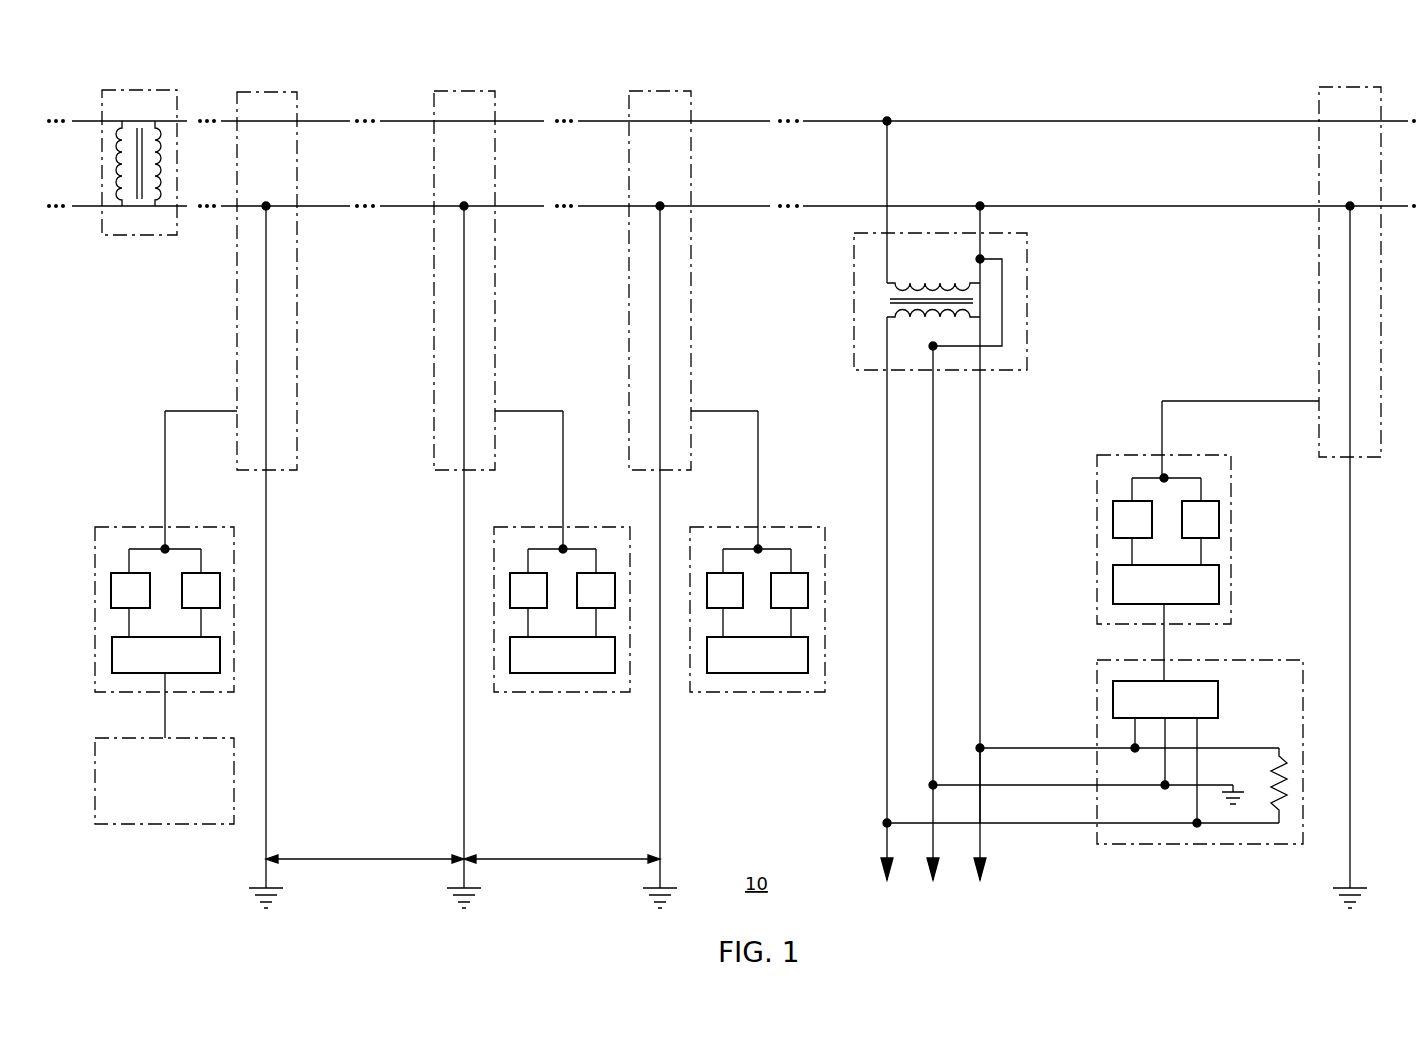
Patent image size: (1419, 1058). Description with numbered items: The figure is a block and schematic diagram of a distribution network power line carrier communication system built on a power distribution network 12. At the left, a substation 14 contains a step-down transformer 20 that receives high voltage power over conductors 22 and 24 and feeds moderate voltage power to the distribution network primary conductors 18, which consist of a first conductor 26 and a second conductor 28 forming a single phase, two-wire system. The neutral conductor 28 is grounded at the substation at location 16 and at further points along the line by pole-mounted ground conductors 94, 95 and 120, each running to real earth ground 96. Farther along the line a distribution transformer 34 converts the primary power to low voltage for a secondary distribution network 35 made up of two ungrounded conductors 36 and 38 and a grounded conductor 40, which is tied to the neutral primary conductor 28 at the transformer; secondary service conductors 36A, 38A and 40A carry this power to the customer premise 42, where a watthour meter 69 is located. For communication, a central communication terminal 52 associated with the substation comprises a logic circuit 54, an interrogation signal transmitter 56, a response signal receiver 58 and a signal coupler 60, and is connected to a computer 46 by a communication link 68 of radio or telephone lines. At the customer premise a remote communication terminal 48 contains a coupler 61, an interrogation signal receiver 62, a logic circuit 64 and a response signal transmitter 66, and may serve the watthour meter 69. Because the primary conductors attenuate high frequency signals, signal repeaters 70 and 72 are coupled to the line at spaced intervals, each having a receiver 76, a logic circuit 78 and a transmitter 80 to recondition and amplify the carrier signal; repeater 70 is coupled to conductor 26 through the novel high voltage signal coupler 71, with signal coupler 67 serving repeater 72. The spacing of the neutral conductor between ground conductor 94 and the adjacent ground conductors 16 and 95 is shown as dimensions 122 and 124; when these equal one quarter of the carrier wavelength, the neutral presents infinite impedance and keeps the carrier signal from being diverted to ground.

The power distribution network 12 is at (884, 182).
The substation 14 is at (118, 153).
The ground location 16 is at (266, 659).
The distribution network primary conductors 18 is at (551, 165).
The step-down transformer 20 is at (138, 150).
The conductor 22 is at (92, 123).
The conductor 24 is at (92, 208).
The first primary conductor 26 is at (322, 124).
The second primary conductor 28 is at (322, 209).
The distribution transformer 34 is at (854, 292).
The secondary distribution network 35 is at (920, 707).
The secondary conductor 36 is at (887, 462).
The secondary conductor 38 is at (980, 462).
The grounded secondary conductor 40 is at (933, 455).
The customer premise 42 is at (1144, 724).
The computer 46 is at (172, 853).
The remote communication terminal 48 is at (1151, 512).
The central communication terminal 52 is at (214, 557).
The logic circuit 54 is at (210, 667).
The interrogation signal transmitter 56 is at (208, 582).
The response signal receiver 58 is at (123, 578).
The signal coupler 60 is at (297, 92).
The coupler 61 is at (1319, 98).
The interrogation signal receiver 62 is at (1132, 519).
The logic circuit 64 is at (1166, 584).
The response signal transmitter 66 is at (1200, 519).
The signal coupler 67 is at (691, 103).
The communication link 68 is at (165, 716).
The watthour meter 69 is at (1101, 674).
The signal repeater 70 is at (580, 575).
The high voltage signal coupler 71 is at (495, 102).
The signal repeater 72 is at (804, 692).
The receiver 76 is at (580, 600).
The logic circuit 78 is at (568, 692).
The transmitter 80 is at (512, 575).
The ground conductor 94 is at (464, 640).
The ground conductor 95 is at (660, 790).
The real earth ground 96 is at (270, 903).
The ground conductor 120 is at (1350, 864).
The dimension 122 is at (365, 869).
The dimension 124 is at (558, 869).
The secondary service conductor 36A is at (1055, 748).
The secondary service conductor 38A is at (1012, 823).
The secondary service conductor 40A is at (1010, 785).